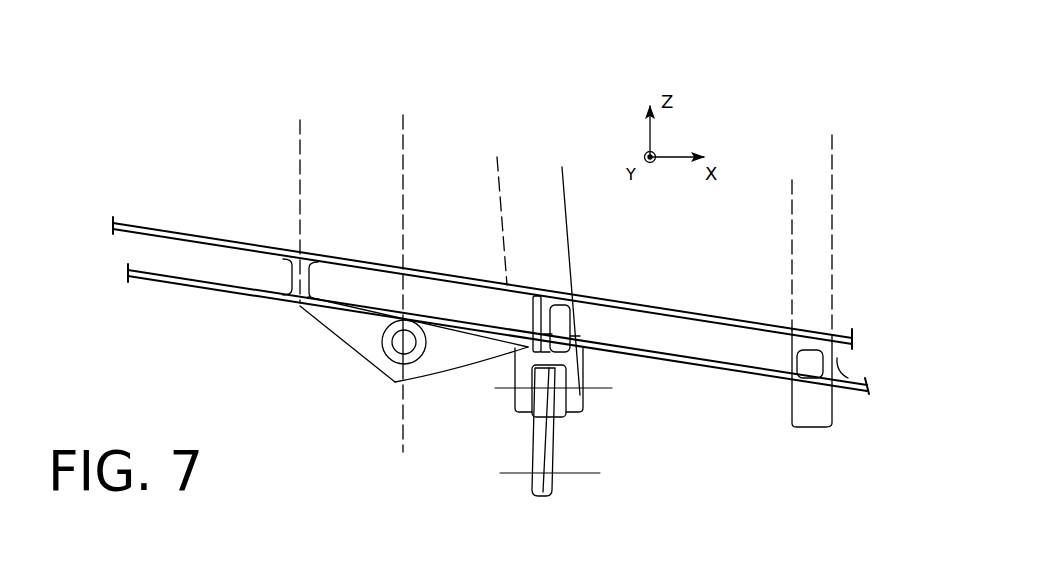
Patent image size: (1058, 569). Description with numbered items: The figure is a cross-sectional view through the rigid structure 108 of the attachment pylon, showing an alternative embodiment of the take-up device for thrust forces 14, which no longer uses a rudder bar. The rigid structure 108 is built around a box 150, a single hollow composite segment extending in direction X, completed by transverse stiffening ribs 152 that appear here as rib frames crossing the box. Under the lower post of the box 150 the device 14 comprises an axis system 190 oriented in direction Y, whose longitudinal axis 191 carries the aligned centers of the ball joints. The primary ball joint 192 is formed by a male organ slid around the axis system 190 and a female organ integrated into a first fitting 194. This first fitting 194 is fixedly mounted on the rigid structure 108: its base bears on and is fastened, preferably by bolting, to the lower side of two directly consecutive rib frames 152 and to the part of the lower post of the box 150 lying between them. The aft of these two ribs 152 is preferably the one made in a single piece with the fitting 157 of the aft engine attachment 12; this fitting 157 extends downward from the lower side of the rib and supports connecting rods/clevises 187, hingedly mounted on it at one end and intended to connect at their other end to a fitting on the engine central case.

The rigid structure 108 is at (529, 86).
The transverse stiffening ribs 152 is at (301, 196).
The box 150 is at (652, 304).
The longitudinal axis 191 is at (411, 337).
The first fitting 194 is at (334, 338).
The axis system 190 is at (386, 362).
The primary ball joint 192 is at (399, 368).
The take-up device for thrust forces 14 is at (443, 390).
The fitting 157 is at (580, 363).
The aft engine attachment 12 is at (616, 397).
The connecting rods/clevises 187 is at (560, 430).